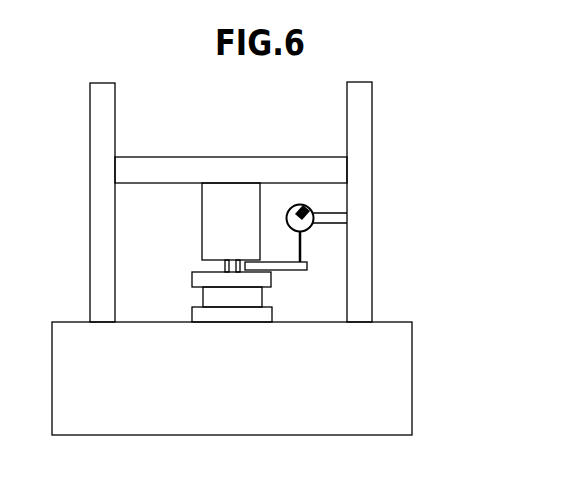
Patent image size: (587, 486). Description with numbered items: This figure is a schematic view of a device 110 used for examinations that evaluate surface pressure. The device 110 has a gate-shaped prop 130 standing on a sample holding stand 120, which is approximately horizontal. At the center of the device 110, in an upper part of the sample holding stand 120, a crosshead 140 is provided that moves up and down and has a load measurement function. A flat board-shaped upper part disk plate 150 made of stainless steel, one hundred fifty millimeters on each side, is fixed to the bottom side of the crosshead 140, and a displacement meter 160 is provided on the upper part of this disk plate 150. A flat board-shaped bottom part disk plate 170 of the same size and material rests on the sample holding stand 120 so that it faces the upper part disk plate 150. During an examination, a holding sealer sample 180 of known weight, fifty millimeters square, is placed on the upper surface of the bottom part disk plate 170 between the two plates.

The device 110 is at (542, 97).
The sample holding stand 120 is at (412, 370).
The gate-shaped prop 130 is at (372, 110).
The crosshead 140 is at (202, 237).
The upper part disk plate 150 is at (200, 274).
The displacement meter 160 is at (311, 208).
The bottom part disk plate 170 is at (203, 312).
The holding sealer sample 180 is at (262, 294).